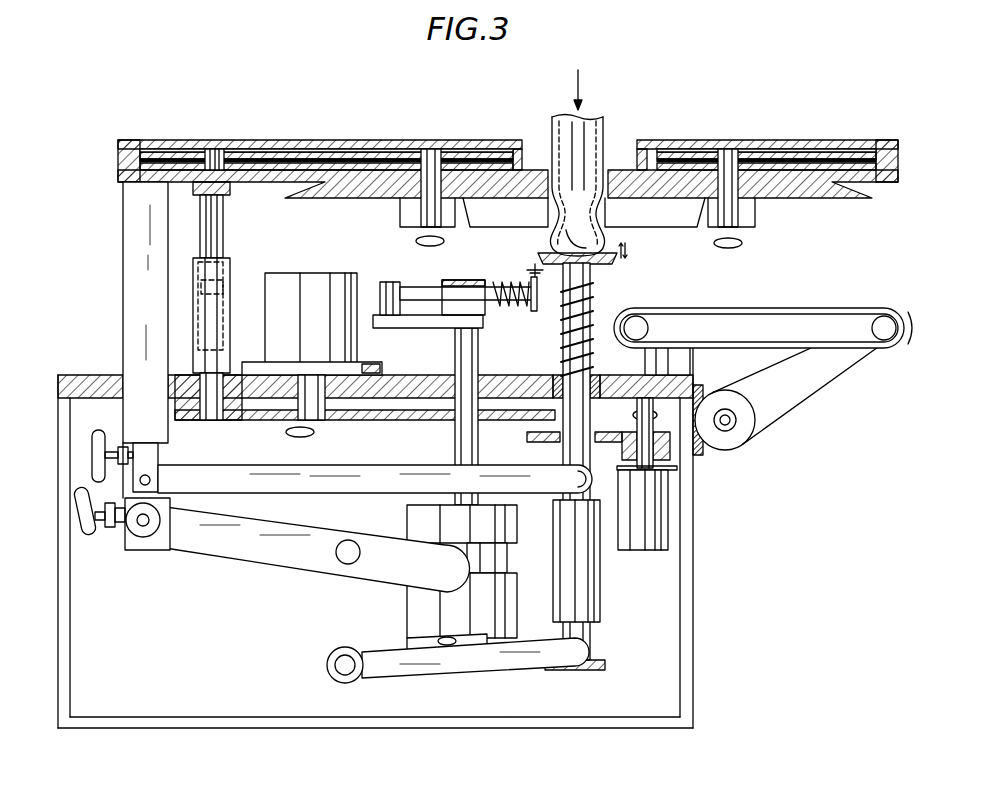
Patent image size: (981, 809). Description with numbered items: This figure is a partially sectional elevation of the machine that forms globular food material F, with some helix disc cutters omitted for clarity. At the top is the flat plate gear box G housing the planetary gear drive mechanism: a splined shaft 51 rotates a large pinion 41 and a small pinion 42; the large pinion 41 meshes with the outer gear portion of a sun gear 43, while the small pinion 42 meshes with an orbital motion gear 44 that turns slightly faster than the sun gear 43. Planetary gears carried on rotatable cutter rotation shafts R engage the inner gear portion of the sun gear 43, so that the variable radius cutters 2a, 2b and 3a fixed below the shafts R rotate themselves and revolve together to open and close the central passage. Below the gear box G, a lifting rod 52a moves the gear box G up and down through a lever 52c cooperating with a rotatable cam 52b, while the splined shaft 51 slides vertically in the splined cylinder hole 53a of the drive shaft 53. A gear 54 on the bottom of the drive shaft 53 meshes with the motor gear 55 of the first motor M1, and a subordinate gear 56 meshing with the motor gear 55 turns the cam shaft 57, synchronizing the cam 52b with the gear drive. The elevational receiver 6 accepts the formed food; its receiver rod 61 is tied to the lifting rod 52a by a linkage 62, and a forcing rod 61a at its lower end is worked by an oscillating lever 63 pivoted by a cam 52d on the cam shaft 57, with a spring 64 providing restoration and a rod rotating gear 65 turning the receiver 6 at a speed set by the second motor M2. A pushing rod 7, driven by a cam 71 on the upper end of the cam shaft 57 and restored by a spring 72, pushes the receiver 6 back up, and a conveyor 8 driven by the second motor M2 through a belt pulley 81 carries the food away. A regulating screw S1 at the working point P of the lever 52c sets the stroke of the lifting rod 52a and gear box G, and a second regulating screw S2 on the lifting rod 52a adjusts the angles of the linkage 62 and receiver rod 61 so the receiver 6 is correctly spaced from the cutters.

The gear box G is at (134, 140).
The large pinion 41 is at (180, 150).
The small pinion 42 is at (253, 152).
The sun gear 43 is at (352, 150).
The orbital motion gear 44 is at (388, 150).
The workpiece (fruit) F is at (611, 133).
The variable radius cutter 2a is at (323, 196).
The variable radius cutter 2b is at (845, 198).
The variable radius cutter 3a is at (675, 228).
The cutter rotation shaft R is at (418, 200).
The elevational receiver 6 is at (542, 254).
The pushing rod 7 is at (533, 310).
The conveyor 8 is at (812, 308).
The belt pulley 81 is at (830, 372).
The splined shaft 51 is at (222, 220).
The lifting rod 52a is at (128, 226).
The rotatable cam 52b is at (400, 594).
The lever 52c is at (240, 560).
The cam 52d is at (432, 652).
The drive shaft 53 is at (195, 322).
The splined cylinder hole 53a is at (218, 300).
The gear 54 is at (200, 421).
The motor gear 55 is at (342, 421).
The subordinate gear 56 is at (412, 421).
The cam shaft 57 is at (455, 340).
The receiver rod 61 is at (592, 302).
The forcing rod 61a is at (600, 622).
The linkage 62 is at (340, 492).
The oscillating lever 63 is at (508, 668).
The spring 64 is at (575, 333).
The rod rotating gear 65 is at (527, 440).
The cam 71 is at (395, 328).
The spring 72 is at (497, 283).
The first motor M1 is at (336, 272).
The second motor M2 is at (655, 552).
The working point P is at (130, 532).
The regulating screw S1 is at (80, 510).
The regulating screw S2 is at (92, 456).